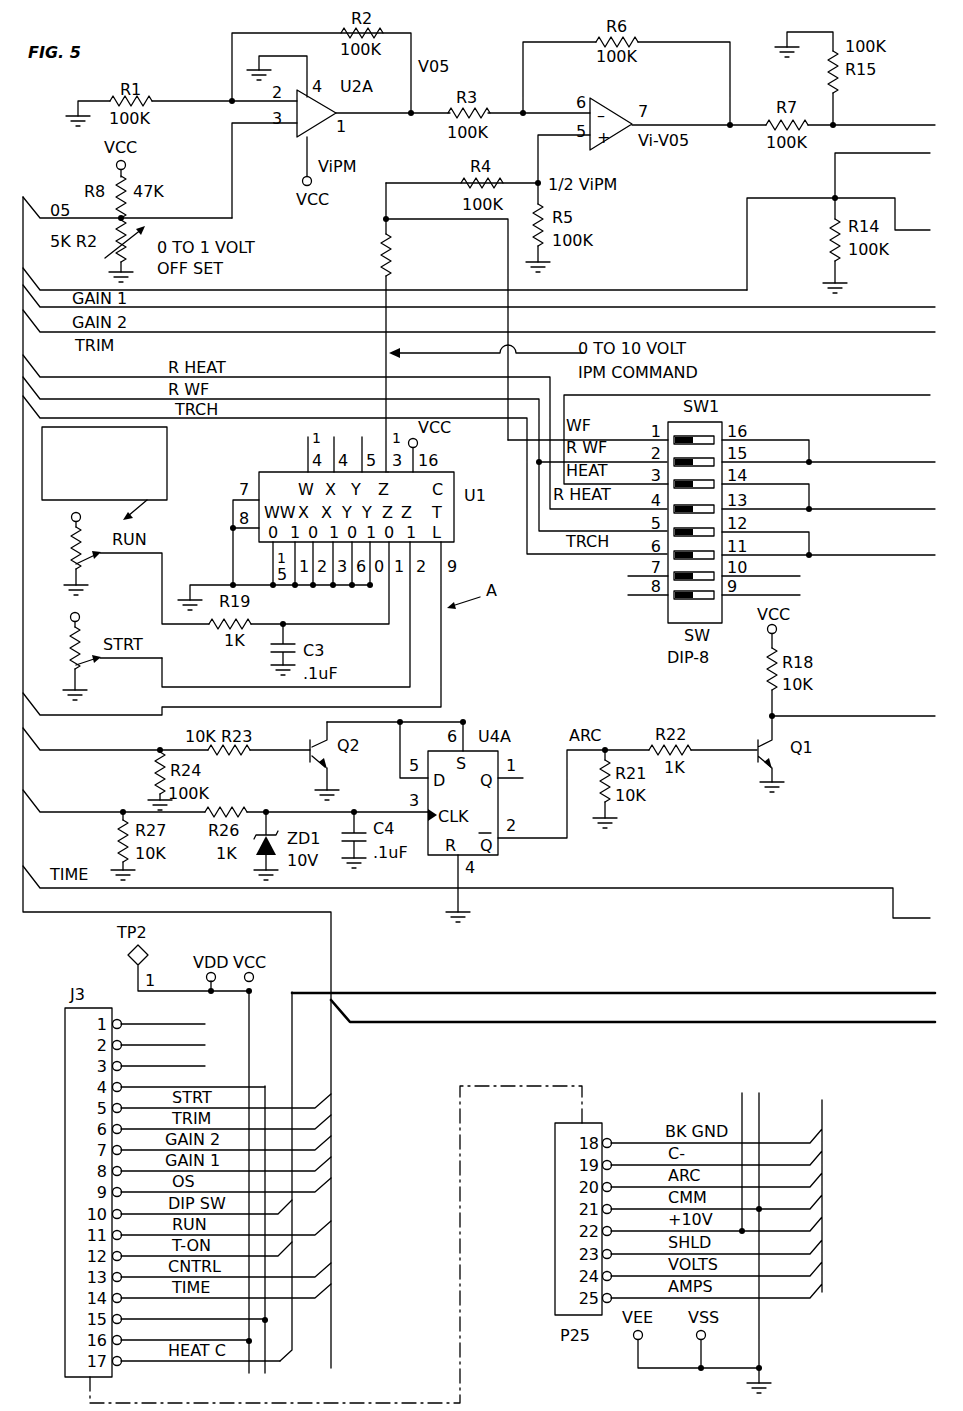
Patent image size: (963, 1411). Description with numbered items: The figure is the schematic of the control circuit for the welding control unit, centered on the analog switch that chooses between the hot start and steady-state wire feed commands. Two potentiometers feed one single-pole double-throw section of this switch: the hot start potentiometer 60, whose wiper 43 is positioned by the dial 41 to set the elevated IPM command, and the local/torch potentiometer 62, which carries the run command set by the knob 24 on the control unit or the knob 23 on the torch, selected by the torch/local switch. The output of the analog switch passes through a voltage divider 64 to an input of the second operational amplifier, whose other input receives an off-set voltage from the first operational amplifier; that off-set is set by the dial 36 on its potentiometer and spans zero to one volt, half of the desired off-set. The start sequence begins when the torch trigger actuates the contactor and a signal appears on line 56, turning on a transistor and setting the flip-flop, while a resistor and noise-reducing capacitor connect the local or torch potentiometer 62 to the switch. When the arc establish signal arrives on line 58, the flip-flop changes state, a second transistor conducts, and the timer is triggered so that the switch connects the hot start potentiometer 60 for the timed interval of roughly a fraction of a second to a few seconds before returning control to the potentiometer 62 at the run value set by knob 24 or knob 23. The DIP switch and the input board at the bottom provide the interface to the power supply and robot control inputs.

The knob 23 is at (104, 463).
The knob 24 is at (100, 478).
The dial 36 is at (143, 232).
The dial 41 is at (101, 619).
The wiper 43 is at (90, 665).
The line 56 is at (102, 754).
The line 58 is at (86, 815).
The hot start potentiometer 60 is at (75, 679).
The local/torch potentiometer 62 is at (75, 577).
The voltage divider 64 is at (379, 222).